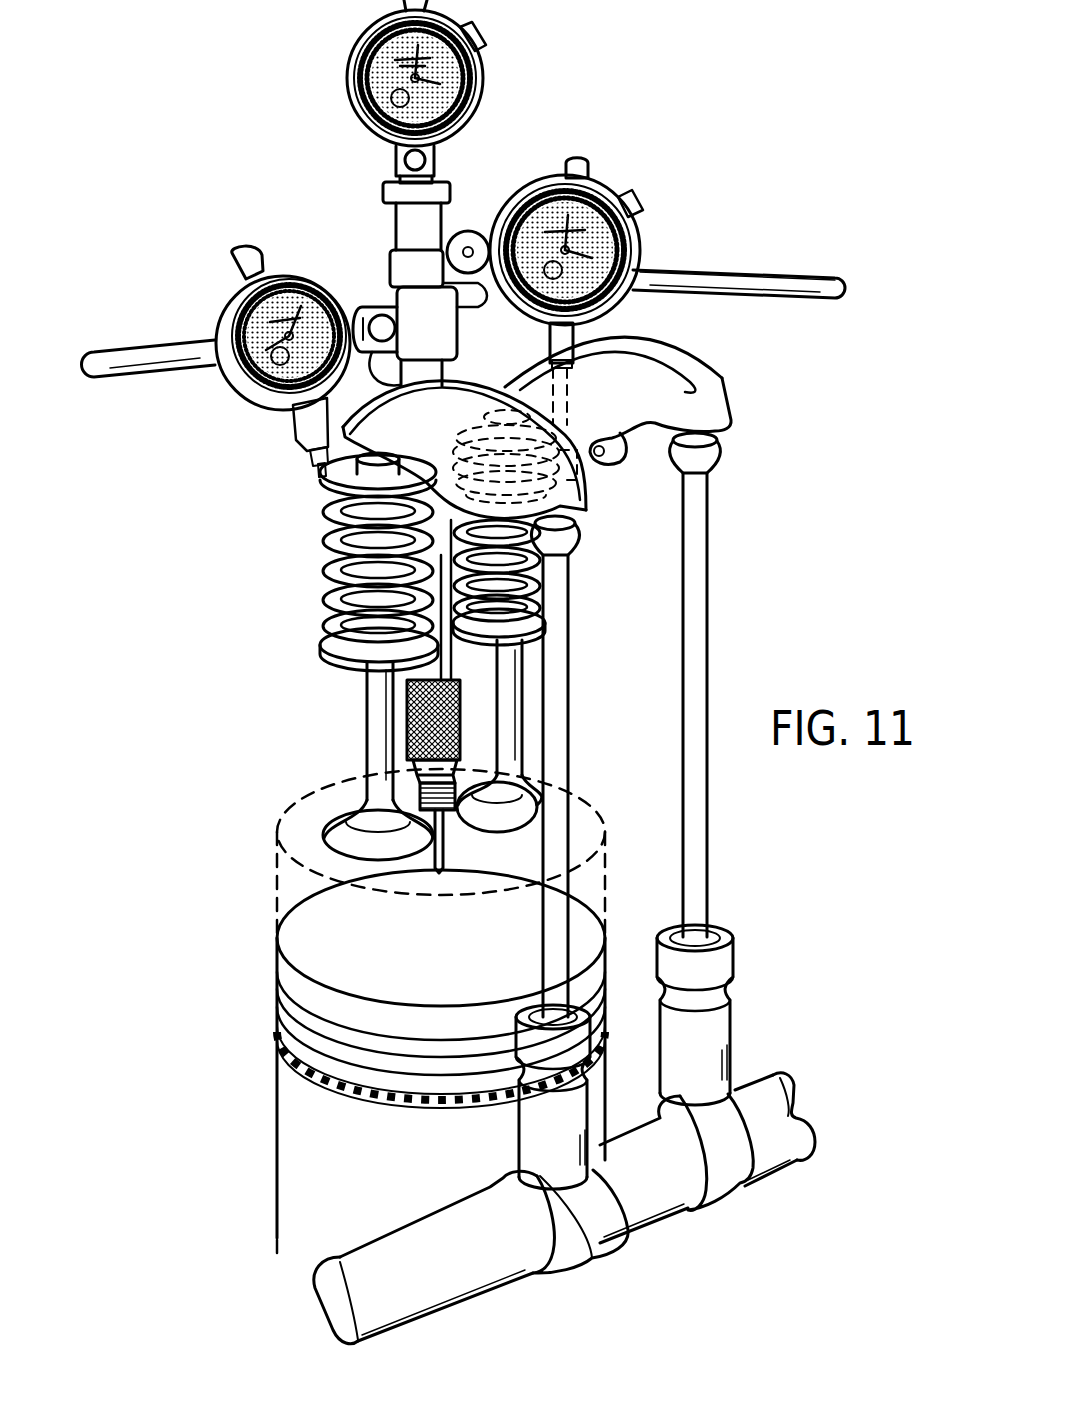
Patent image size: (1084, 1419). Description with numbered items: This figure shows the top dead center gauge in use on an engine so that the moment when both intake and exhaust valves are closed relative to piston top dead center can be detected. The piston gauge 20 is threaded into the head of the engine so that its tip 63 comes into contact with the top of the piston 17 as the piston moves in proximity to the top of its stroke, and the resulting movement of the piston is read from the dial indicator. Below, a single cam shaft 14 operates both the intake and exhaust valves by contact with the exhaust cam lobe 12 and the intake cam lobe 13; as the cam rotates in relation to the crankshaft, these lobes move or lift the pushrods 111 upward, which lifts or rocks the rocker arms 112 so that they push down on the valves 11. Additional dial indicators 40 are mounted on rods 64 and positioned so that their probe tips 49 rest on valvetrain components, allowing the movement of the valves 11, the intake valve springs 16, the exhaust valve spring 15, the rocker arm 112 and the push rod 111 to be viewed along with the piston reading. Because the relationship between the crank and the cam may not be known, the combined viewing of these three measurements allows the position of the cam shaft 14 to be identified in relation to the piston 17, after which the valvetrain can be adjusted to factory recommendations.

The piston gauge 20 is at (508, 27).
The dial indicator 40 is at (176, 254).
The indicator support rod 64 is at (795, 296).
The rocker arm 112 is at (710, 367).
The pushrod 111 is at (708, 538).
The indicator tip 49 is at (318, 464).
The intake valve spring 16 is at (345, 486).
The exhaust valve spring 15 is at (490, 420).
The valve 11 is at (330, 823).
The tip 63 is at (438, 871).
The piston 17 is at (455, 962).
The cam shaft 14 is at (362, 1243).
The exhaust cam lobe 12 is at (728, 1198).
The intake cam lobe 13 is at (615, 1250).